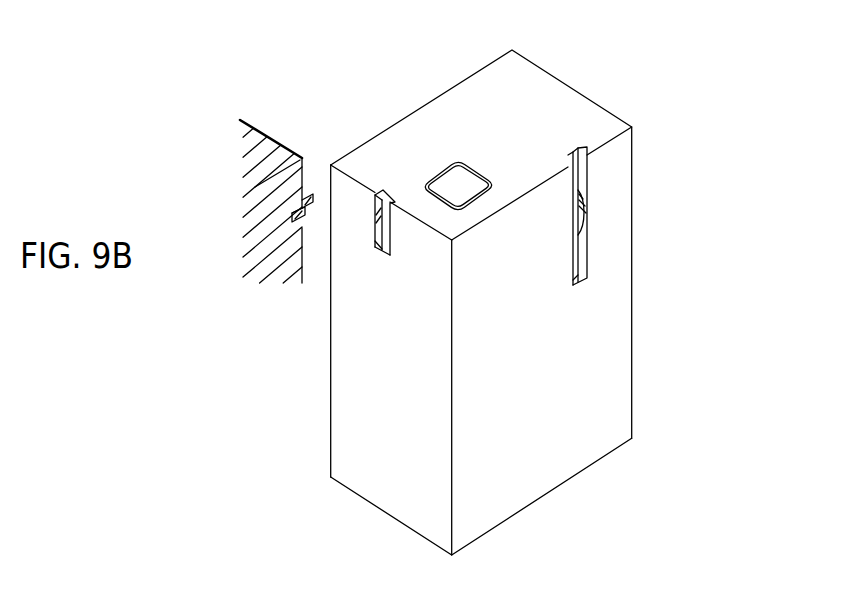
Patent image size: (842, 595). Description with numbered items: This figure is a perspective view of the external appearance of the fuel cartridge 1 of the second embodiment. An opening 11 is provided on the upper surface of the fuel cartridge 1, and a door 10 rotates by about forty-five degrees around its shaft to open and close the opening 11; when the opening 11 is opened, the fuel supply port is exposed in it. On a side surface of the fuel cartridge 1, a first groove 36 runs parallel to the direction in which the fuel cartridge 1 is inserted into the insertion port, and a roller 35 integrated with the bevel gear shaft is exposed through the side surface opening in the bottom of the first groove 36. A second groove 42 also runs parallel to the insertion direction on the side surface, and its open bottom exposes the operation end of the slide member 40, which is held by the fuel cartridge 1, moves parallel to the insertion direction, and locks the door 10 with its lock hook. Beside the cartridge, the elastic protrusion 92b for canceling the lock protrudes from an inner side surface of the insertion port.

The fuel cartridge 1 is at (633, 372).
The door 10 is at (463, 178).
The opening 11 is at (425, 183).
The roller 35 is at (580, 210).
The first groove 36 is at (587, 263).
The slide member 40 is at (377, 200).
The second groove 42 is at (377, 244).
The protrusion 92b is at (306, 228).